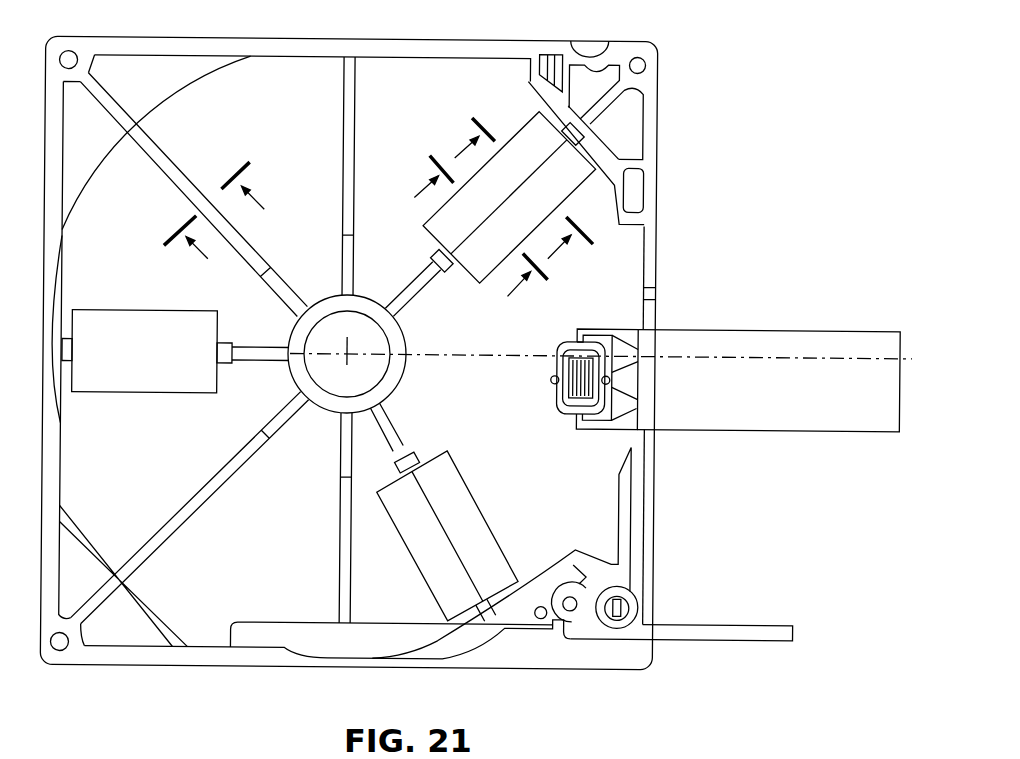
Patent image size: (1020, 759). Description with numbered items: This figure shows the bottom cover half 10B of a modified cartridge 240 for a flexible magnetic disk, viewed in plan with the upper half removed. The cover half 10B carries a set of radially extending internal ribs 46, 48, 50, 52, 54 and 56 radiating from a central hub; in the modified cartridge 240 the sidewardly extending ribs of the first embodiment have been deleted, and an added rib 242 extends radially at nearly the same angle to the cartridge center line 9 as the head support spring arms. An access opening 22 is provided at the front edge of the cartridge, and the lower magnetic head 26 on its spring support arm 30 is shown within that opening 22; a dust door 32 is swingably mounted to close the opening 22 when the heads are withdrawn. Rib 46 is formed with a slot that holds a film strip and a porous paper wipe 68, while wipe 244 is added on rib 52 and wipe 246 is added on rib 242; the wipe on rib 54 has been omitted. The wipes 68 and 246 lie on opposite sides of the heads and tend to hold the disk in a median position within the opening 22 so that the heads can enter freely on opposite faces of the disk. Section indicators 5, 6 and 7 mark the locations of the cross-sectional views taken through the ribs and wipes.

The bottom cover half 10B is at (656, 547).
The modified cartridge 240 is at (659, 122).
The rib 48 is at (341, 156).
The rib 56 is at (340, 523).
The rib 50 is at (264, 259).
The rib 54 is at (218, 491).
The rib 46 is at (424, 288).
The rib 242 is at (393, 422).
The wipe 68 is at (432, 237).
The wipe 246 is at (481, 507).
The wipe 244 is at (143, 395).
The rib 52 is at (257, 343).
The connector assembly 9 is at (706, 374).
The access opening 22 is at (628, 434).
The lower magnetic head 26 is at (567, 389).
The spring support arm 30 is at (781, 415).
The dust door 32 is at (757, 621).
The section line 5 is at (523, 196).
The section line 6 is at (477, 233).
The section line 7 is at (214, 204).